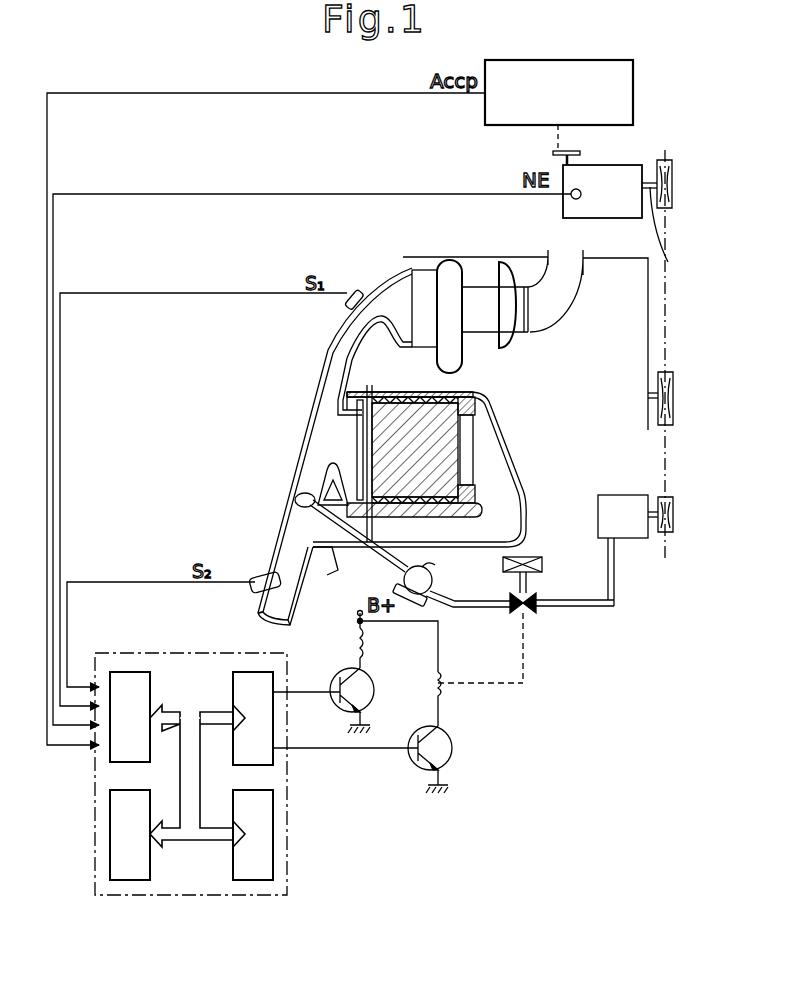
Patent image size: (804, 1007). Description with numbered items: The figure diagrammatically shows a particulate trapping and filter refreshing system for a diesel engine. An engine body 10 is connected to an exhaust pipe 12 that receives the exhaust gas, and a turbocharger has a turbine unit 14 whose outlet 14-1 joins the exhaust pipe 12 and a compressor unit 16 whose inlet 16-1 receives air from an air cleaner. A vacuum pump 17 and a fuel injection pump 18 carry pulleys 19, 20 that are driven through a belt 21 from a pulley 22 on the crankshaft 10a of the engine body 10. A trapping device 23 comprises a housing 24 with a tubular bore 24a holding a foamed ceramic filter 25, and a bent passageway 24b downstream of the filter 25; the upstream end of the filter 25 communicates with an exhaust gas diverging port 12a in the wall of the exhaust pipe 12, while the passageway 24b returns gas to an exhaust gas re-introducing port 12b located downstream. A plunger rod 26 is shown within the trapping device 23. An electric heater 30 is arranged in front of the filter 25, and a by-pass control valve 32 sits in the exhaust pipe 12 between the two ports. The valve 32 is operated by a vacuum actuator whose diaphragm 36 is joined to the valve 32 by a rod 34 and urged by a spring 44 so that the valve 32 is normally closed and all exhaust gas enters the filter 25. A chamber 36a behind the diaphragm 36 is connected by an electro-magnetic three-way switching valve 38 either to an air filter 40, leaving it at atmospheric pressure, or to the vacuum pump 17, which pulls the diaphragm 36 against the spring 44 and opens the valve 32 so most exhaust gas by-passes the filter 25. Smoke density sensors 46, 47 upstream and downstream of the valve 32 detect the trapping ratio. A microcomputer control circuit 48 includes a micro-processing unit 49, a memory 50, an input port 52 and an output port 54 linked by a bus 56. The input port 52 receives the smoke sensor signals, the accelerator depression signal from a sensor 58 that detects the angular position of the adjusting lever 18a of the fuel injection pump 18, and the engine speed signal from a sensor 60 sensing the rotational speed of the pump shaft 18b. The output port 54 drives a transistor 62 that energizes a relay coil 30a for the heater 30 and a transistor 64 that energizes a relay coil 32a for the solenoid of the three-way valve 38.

The engine body 10 is at (620, 275).
The crankshaft 10a is at (648, 410).
The exhaust pipe 12 is at (380, 292).
The exhaust gas diverging port 12a is at (340, 433).
The exhaust gas re-introducing port 12b is at (310, 528).
The turbine unit 14 is at (446, 273).
The turbine outlet 14-1 is at (422, 278).
The compressor unit 16 is at (508, 272).
The compressor inlet 16-1 is at (524, 318).
The vacuum pump 17 is at (636, 520).
The fuel injection pump 18 is at (640, 165).
The adjusting lever 18a is at (598, 138).
The shaft 18b is at (679, 224).
The pulley 19 is at (664, 533).
The pulley 20 is at (672, 158).
The belt 21 is at (662, 468).
The pulley 22 is at (660, 430).
The trapping device 23 is at (486, 435).
The housing 24 is at (462, 390).
The tubular bore 24a is at (440, 388).
The bent passageway 24b is at (460, 530).
The filter 25 is at (446, 456).
The plunger rod 26 is at (416, 372).
The electric heater 30 is at (367, 455).
The relay coil 30a is at (355, 660).
The by-pass control valve 32 is at (300, 496).
The relay coil 32a is at (444, 690).
The rod 34 is at (402, 580).
The diaphragm 36 is at (430, 567).
The chamber 36a is at (445, 595).
The electro-magnetic three-way switching valve 38 is at (537, 596).
The air filter 40 is at (531, 555).
The spring 44 is at (421, 602).
The smoke density sensor 46 is at (345, 308).
The smoke density sensor 47 is at (258, 578).
The control circuit 48 is at (288, 818).
The micro-processing unit 49 is at (150, 862).
The memory 50 is at (230, 858).
The input port 52 is at (140, 763).
The output port 54 is at (258, 766).
The bus 56 is at (210, 800).
The accelerator depression sensor 58 is at (634, 92).
The engine speed sensor 60 is at (581, 194).
The transistor 62 is at (368, 678).
The transistor 64 is at (453, 748).